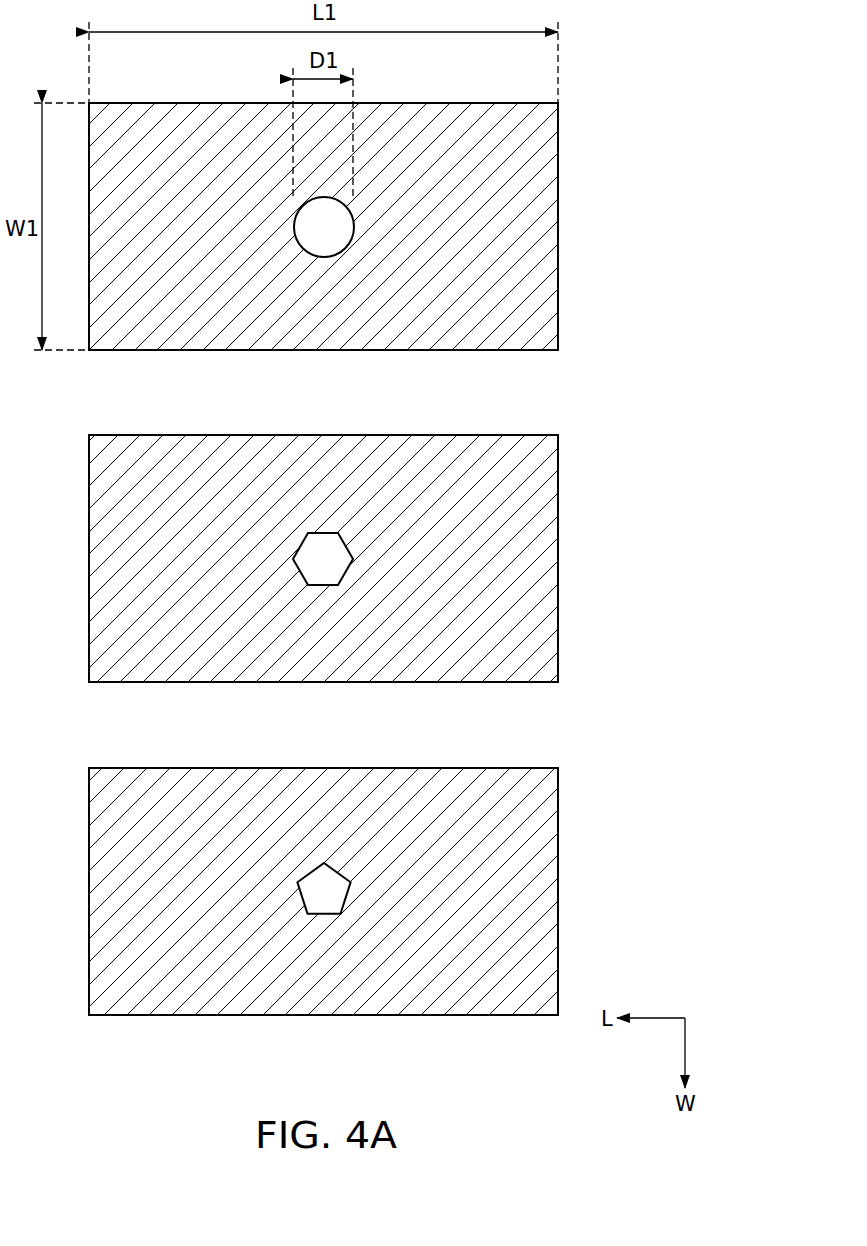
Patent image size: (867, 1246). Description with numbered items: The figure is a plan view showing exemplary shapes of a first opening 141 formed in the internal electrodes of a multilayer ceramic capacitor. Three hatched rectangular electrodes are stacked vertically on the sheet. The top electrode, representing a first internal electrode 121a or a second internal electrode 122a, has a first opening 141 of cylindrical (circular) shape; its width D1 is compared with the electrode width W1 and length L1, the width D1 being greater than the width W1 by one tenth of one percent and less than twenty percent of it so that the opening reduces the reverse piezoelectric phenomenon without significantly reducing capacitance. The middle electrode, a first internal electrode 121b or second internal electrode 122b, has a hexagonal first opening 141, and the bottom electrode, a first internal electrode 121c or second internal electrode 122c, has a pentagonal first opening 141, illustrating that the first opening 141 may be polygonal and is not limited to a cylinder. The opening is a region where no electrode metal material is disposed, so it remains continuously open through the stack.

The first internal electrode 121a is at (433, 623).
The second internal electrode 122a is at (531, 209).
The first internal electrode 121b is at (433, 623).
The second internal electrode 122b is at (532, 578).
The first internal electrode 121c is at (433, 623).
The second internal electrode 122c is at (531, 948).
The first opening 141 is at (326, 227).